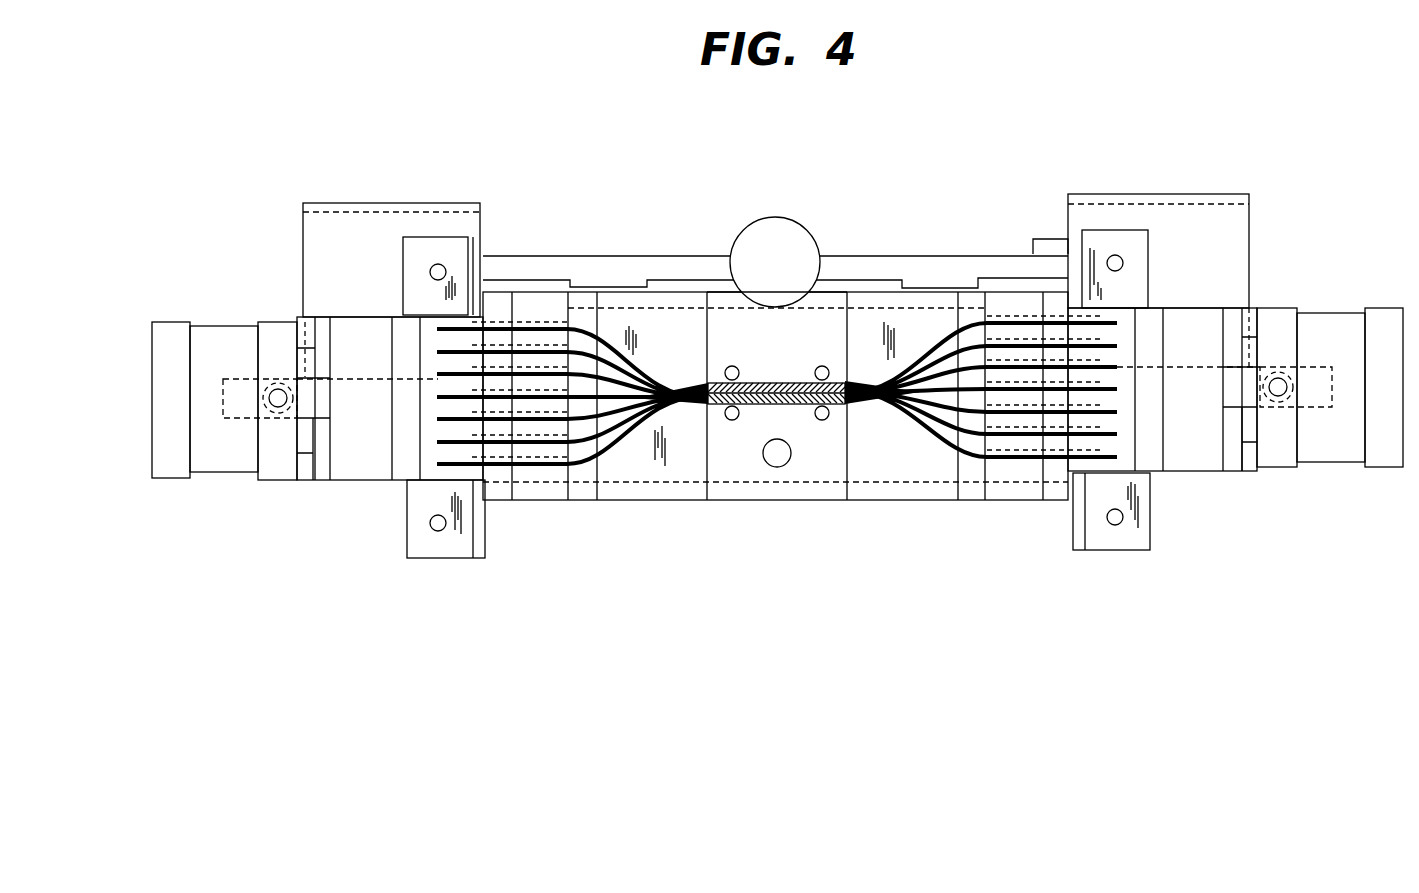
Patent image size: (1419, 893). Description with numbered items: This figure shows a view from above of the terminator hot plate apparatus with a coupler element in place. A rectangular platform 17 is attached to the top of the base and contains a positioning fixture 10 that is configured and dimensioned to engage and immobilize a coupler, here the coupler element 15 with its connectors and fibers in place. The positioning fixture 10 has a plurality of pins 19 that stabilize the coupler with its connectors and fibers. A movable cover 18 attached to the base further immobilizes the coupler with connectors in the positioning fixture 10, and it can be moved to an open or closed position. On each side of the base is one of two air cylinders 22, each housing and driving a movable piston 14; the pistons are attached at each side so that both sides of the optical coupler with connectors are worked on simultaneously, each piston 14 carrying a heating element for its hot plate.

The positioning fixture 10 is at (943, 497).
The movable piston 14 is at (235, 408).
The coupler element 15 is at (900, 413).
The rectangular platform 17 is at (873, 317).
The movable cover 18 is at (540, 267).
The pins 19 is at (742, 373).
The air cylinders 22 is at (170, 468).